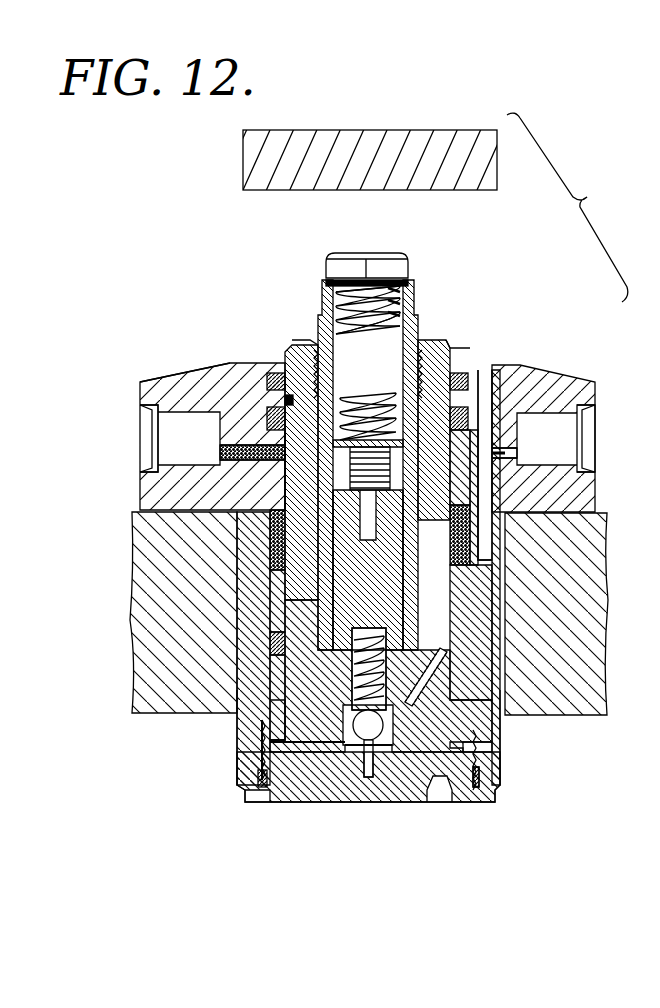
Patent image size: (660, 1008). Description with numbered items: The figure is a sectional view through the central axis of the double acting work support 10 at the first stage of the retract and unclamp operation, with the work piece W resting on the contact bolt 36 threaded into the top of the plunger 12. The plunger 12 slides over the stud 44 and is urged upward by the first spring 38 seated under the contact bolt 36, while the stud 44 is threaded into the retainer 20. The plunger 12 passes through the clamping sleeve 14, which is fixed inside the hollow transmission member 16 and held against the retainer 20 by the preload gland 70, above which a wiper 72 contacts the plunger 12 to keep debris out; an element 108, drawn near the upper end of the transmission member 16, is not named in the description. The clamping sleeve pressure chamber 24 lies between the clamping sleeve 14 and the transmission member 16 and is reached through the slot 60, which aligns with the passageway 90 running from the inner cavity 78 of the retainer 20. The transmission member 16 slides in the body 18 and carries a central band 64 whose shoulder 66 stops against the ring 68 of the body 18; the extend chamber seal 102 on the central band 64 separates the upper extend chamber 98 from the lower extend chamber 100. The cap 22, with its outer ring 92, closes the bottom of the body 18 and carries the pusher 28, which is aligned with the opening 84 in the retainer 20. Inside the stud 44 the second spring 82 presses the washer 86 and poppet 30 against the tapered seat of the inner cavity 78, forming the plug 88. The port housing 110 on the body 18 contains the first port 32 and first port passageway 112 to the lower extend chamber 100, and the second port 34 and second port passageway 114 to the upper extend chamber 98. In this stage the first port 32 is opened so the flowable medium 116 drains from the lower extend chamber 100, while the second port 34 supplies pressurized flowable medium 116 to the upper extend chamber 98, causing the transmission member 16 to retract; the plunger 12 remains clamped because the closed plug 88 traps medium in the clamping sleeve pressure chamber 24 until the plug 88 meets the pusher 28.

The work piece W is at (248, 150).
The work support 10 is at (145, 353).
The plunger 12 is at (320, 300).
The clamping sleeve 14 is at (298, 462).
The transmission member 16 is at (458, 336).
The body 18 is at (502, 752).
The retainer 20 is at (268, 768).
The cap 22 is at (240, 798).
The clamping sleeve pressure chamber 24 is at (297, 492).
The pusher 28 is at (366, 742).
The poppet 30 is at (376, 732).
The first port 32 is at (586, 428).
The second port 34 is at (146, 418).
The contact bolt 36 is at (372, 268).
The first spring 38 is at (402, 330).
The stud 44 is at (280, 590).
The slot 60 is at (432, 635).
The central band 64 is at (272, 600).
The shoulder 66 is at (462, 565).
The ring 68 is at (495, 508).
The preload gland 70 is at (300, 345).
The wiper 72 is at (310, 337).
The inner cavity 78 is at (462, 748).
The second spring 82 is at (360, 645).
The opening 84 is at (343, 747).
The washer 86 is at (300, 700).
The plug 88 is at (290, 747).
The passageway 90 is at (440, 695).
The ring 92 is at (482, 782).
The upper extend chamber 98 is at (458, 545).
The lower extend chamber 100 is at (268, 720).
The extend chamber seal 102 is at (282, 640).
The collar 108 is at (460, 368).
The port housing 110 is at (555, 385).
The first port passageway 112 is at (515, 451).
The second port passageway 114 is at (222, 451).
The flowable medium 116 is at (270, 540).